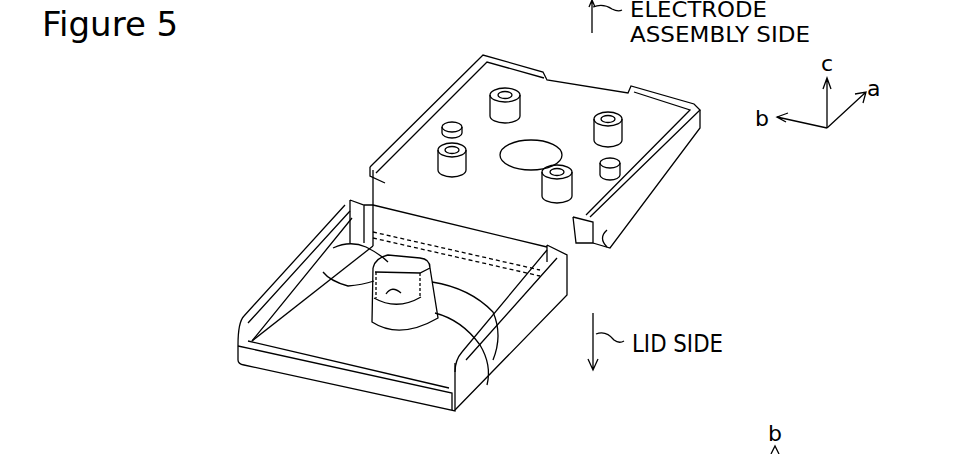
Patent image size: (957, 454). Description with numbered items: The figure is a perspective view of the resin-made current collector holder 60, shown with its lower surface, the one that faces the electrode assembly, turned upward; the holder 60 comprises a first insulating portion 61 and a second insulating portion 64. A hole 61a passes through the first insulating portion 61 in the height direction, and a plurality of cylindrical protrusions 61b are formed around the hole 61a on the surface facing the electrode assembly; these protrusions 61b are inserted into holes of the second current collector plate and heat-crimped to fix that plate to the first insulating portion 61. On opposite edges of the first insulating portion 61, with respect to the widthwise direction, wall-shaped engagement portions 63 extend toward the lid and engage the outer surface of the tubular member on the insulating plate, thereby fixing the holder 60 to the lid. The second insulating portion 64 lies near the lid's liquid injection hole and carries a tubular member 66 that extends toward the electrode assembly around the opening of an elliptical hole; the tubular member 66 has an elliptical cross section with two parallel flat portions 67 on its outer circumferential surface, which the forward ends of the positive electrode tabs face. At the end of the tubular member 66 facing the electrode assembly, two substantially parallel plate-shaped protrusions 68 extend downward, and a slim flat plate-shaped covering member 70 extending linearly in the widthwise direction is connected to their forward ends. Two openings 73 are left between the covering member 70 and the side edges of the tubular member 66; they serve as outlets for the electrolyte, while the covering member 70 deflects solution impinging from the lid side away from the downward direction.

The current collector holder 60 is at (299, 91).
The first insulating portion 61 is at (647, 137).
The hole 61a is at (523, 157).
The cylindrical protrusions 61b is at (447, 163).
The engagement portions 63 is at (663, 191).
The second insulating portion 64 is at (348, 343).
The tubular member 66 is at (405, 323).
The flat portions 67 is at (483, 357).
The plate-shaped protrusions 68 is at (323, 272).
The covering member 70 is at (333, 248).
The openings 73 is at (395, 290).